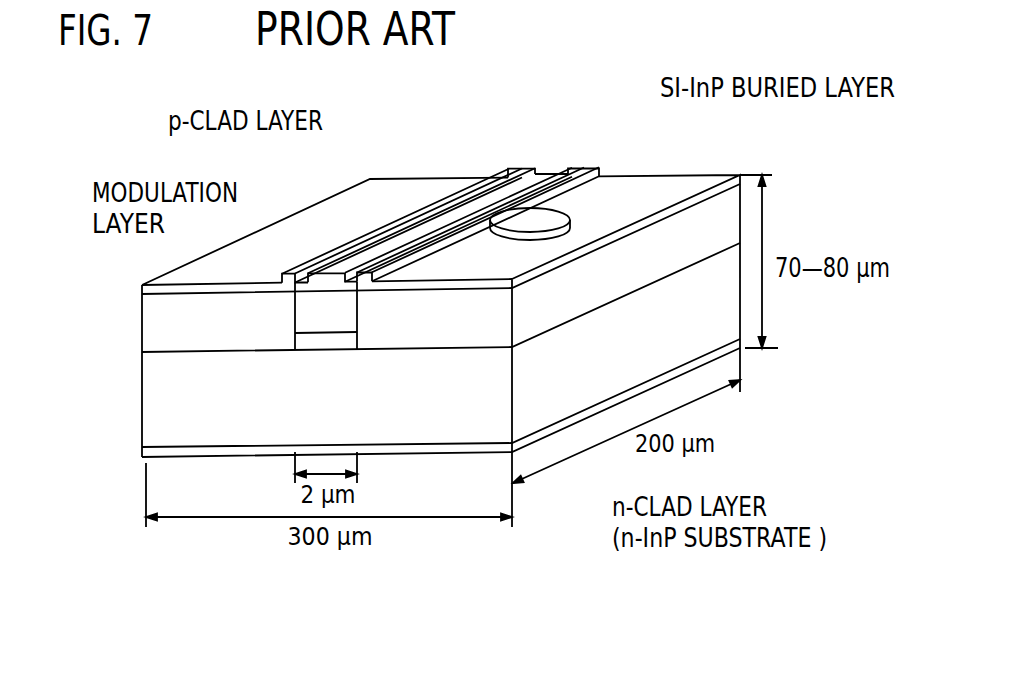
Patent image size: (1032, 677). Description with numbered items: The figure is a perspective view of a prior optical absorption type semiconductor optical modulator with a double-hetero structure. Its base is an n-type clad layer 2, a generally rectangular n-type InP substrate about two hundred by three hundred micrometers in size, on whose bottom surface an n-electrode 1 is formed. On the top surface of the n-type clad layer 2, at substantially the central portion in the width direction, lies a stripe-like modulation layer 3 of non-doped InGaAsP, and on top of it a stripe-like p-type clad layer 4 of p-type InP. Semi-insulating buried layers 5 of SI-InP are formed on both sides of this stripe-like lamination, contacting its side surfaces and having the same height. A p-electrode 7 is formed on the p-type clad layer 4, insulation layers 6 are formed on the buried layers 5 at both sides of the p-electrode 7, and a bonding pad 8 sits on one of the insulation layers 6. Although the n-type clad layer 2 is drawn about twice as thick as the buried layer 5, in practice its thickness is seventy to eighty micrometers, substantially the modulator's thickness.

The n-electrode 1 is at (720, 353).
The n-type clad layer 2 is at (548, 403).
The modulation layer 3 is at (308, 345).
The p-type clad layer 4 is at (323, 313).
The semi-insulating buried layers 5 is at (155, 326).
The insulation layers 6 is at (393, 200).
The p-electrode 7 is at (440, 198).
The bonding pad 8 is at (522, 217).